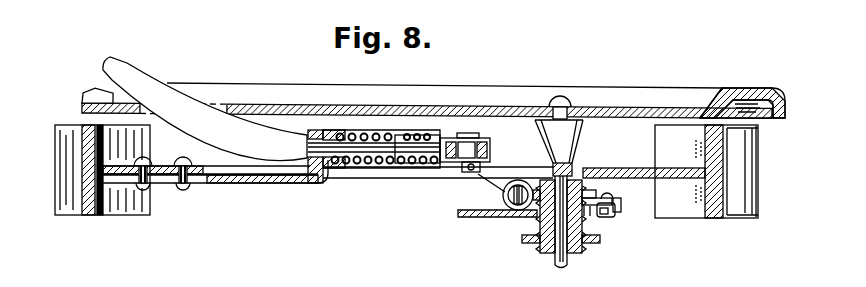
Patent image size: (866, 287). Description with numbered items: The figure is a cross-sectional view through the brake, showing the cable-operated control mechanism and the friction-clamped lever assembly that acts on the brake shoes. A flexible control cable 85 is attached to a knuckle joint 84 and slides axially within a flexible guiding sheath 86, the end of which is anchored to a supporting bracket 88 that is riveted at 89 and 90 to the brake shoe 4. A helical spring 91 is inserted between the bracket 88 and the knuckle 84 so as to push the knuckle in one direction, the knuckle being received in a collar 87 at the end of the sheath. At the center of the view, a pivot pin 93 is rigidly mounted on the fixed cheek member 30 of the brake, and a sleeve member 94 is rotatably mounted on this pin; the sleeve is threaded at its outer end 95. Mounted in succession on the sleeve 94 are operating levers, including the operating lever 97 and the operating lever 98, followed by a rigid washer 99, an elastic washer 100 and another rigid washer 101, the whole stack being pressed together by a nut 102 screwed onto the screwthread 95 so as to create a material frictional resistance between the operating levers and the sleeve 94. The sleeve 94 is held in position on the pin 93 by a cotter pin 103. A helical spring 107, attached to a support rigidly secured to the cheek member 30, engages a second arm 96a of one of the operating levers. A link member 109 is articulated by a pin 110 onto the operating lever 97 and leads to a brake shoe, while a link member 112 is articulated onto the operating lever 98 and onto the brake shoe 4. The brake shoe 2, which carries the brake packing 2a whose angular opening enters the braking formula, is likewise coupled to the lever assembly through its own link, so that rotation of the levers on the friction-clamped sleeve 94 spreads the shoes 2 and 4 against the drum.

The brake shoe 2 is at (693, 173).
The brake packing 2a is at (725, 152).
The brake shoe 4 is at (93, 200).
The fixed cheek member 30 is at (786, 104).
The knuckle joint 84 is at (452, 157).
The flexible control cable 85 is at (362, 163).
The flexible guiding sheath 86 is at (250, 147).
The collar 87 is at (300, 163).
The supporting bracket 88 is at (213, 183).
The rivet 89 is at (180, 185).
The rivet 90 is at (142, 184).
The helical spring 91 is at (347, 165).
The pivot pin 93 is at (562, 182).
The sleeve member 94 is at (572, 183).
The screwthread 95 is at (566, 250).
The second arm 96a is at (527, 203).
The operating lever 97 is at (618, 199).
The operating lever 98 is at (620, 213).
The rigid washer 99 is at (615, 217).
The elastic washer 100 is at (608, 220).
The rigid washer 101 is at (600, 222).
The nut 102 is at (600, 240).
The cotter pin 103 is at (555, 265).
The helical spring 107 is at (503, 198).
The link member 109 is at (621, 208).
The pin 110 is at (625, 210).
The link member 112 is at (480, 213).